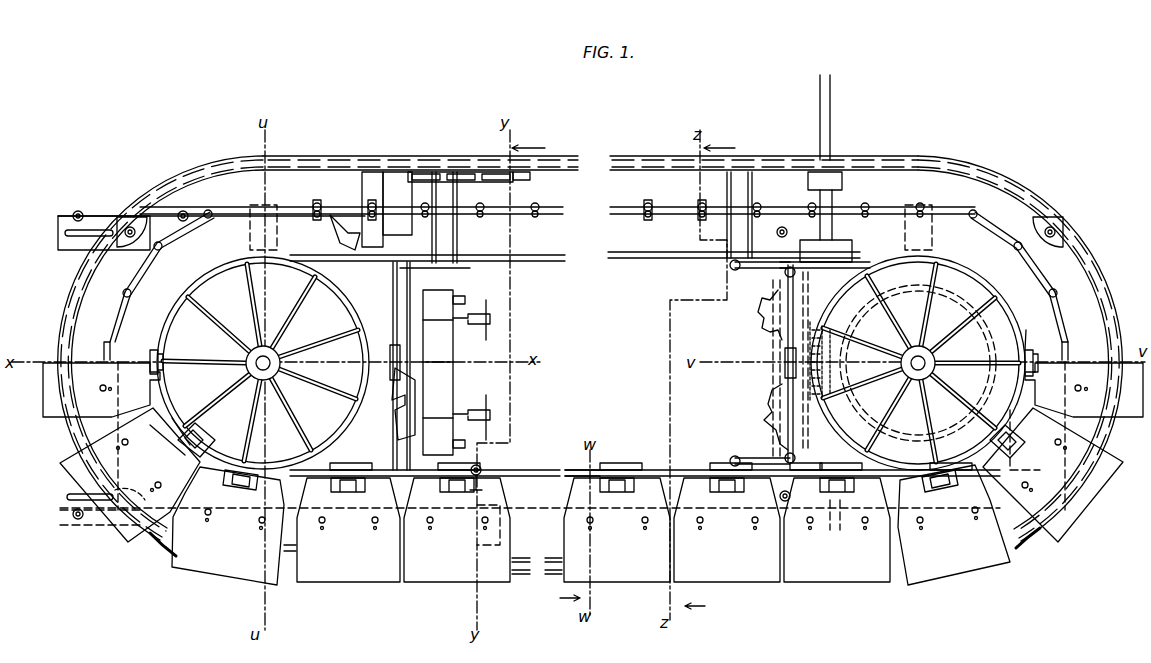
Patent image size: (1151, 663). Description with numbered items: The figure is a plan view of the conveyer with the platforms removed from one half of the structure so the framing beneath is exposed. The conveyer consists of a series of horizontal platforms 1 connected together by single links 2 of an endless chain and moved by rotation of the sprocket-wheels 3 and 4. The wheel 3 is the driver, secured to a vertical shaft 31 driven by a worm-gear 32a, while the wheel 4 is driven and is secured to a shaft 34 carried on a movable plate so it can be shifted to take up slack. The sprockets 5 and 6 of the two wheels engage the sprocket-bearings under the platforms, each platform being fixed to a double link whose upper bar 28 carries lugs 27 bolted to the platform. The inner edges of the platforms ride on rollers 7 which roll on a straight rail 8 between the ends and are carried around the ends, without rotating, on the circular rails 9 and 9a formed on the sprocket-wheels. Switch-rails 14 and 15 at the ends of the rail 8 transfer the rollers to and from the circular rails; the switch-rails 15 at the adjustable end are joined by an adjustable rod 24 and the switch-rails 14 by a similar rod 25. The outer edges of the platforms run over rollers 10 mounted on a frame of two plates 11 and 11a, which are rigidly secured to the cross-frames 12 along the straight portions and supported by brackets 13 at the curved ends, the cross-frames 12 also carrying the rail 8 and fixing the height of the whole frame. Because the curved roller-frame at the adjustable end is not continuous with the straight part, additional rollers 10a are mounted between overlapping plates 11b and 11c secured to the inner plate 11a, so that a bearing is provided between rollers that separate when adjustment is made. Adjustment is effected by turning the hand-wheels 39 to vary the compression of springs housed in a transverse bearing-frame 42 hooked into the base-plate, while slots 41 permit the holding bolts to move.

The horizontal platform 1 is at (593, 474).
The link 2 is at (185, 228).
The sprocket-wheel 3 is at (768, 388).
The sprocket-wheel 4 is at (259, 401).
The sprocket 5 is at (760, 302).
The sprocket 6 is at (336, 226).
The roller 7 is at (622, 470).
The straight rail 8 is at (650, 260).
The circular rail 9 is at (360, 322).
The circular rail 9a is at (1018, 338).
The roller 10 is at (205, 166).
The additional roller 10a is at (440, 183).
The plate 11 is at (343, 157).
The plate 11a is at (548, 180).
The plate 11b is at (480, 183).
The plate 11c is at (512, 178).
The cross-frame 12 is at (457, 230).
The bracket 13 is at (362, 186).
The switch-rail 14 is at (845, 262).
The switch-rail 15 is at (360, 262).
The adjustable rod 24 is at (393, 420).
The adjustable rod 25 is at (787, 338).
The lug 27 is at (376, 204).
The upper bar 28 is at (712, 207).
The vertical shaft 31 is at (937, 362).
The worm-gear 32a is at (893, 356).
The shaft 34 is at (248, 368).
The hand-wheel 39 is at (490, 320).
The slot 41 is at (105, 228).
The transverse bearing-frame 42 is at (452, 390).